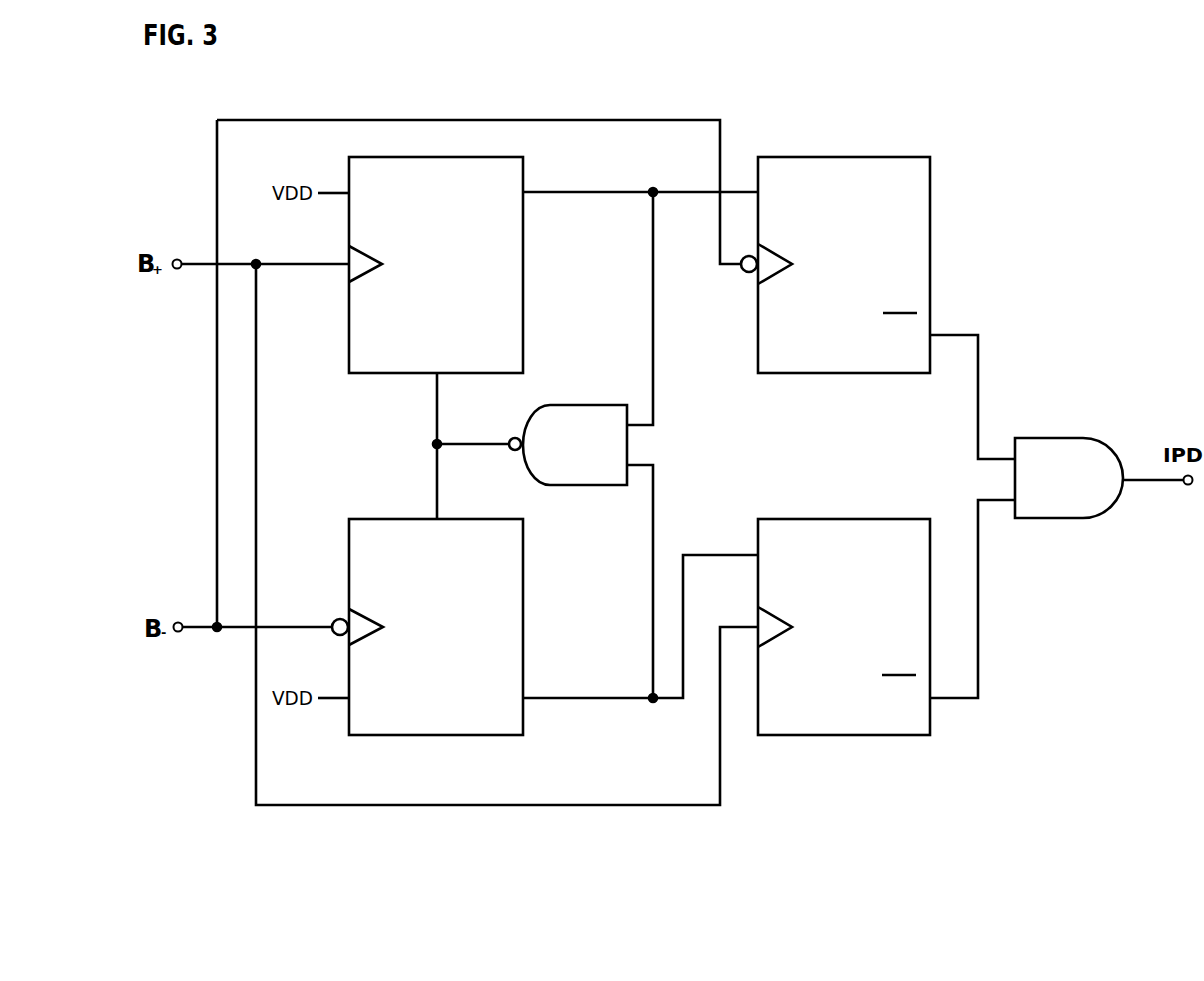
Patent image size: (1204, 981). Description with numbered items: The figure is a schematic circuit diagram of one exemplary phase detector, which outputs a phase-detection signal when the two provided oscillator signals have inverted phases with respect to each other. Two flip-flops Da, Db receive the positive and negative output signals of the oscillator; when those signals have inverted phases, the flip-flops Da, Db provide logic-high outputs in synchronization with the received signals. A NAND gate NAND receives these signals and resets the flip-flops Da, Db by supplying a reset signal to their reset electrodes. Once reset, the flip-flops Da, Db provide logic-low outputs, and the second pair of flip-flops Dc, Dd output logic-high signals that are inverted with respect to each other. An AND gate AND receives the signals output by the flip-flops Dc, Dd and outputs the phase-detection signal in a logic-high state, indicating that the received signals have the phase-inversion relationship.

The flip-flop Da is at (436, 265).
The flip-flop Db is at (427, 627).
The flip-flop Dc is at (835, 265).
The flip-flop Dd is at (844, 627).
The NAND gate NAND is at (568, 463).
The AND gate AND is at (1069, 493).